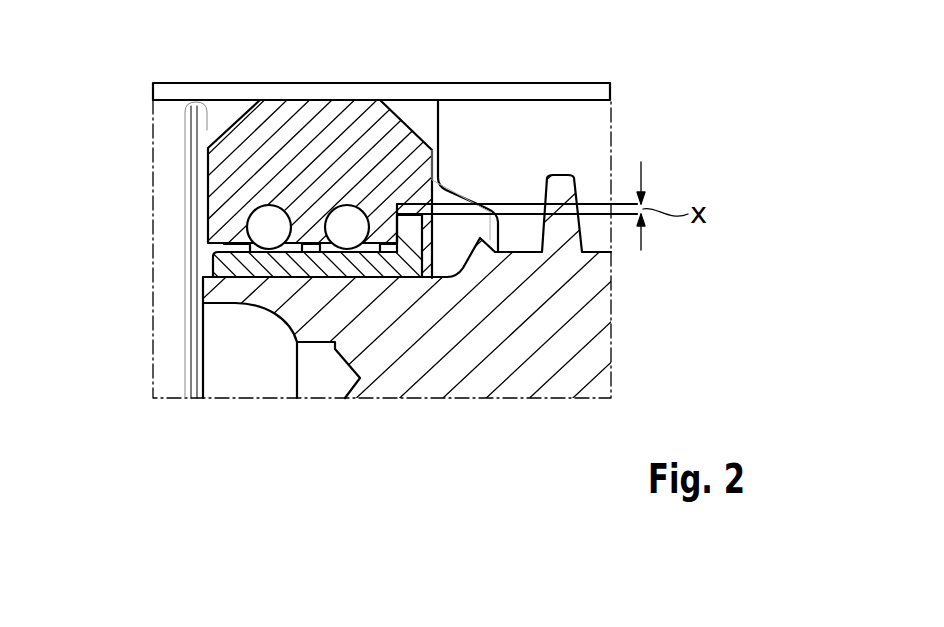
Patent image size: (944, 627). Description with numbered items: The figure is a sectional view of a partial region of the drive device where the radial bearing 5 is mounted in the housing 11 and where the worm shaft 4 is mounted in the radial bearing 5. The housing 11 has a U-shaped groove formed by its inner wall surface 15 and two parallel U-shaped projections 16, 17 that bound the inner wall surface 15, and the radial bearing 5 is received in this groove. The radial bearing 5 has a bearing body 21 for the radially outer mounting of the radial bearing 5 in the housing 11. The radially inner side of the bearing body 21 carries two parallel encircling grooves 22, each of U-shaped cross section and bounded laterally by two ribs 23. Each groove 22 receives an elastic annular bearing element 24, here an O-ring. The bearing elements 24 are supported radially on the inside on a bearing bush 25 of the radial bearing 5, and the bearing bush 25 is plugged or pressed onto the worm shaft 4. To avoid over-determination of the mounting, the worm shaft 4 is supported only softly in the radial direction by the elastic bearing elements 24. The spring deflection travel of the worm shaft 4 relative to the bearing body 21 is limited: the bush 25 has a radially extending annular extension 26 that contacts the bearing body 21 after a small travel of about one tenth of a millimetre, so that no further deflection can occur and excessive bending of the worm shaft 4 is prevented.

The worm shaft 4 is at (597, 308).
The radial bearing 5 is at (126, 122).
The housing 11 is at (528, 92).
The inner wall surface 15 is at (217, 117).
The U-shaped projection 16 is at (188, 162).
The U-shaped projection 17 is at (432, 120).
The bearing body 21 is at (275, 112).
The groove 22 is at (212, 252).
The rib 23 is at (226, 242).
The elastic annular bearing element 24 is at (337, 223).
The bearing bush 25 is at (235, 278).
The annular extension 26 is at (413, 225).